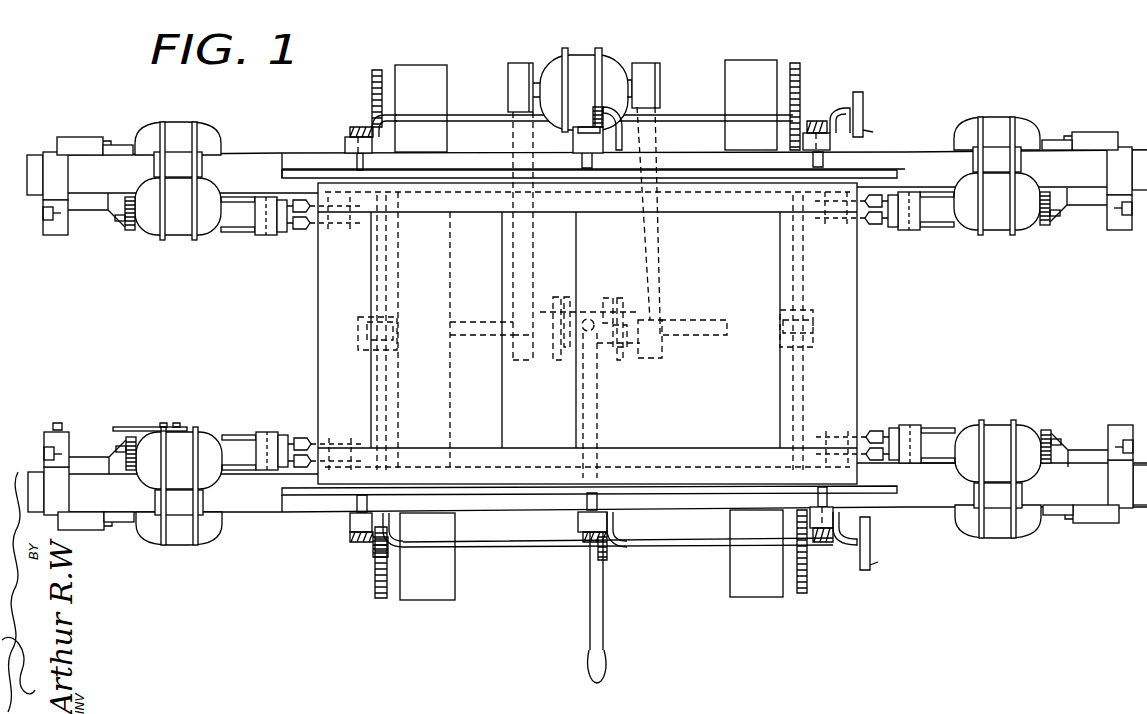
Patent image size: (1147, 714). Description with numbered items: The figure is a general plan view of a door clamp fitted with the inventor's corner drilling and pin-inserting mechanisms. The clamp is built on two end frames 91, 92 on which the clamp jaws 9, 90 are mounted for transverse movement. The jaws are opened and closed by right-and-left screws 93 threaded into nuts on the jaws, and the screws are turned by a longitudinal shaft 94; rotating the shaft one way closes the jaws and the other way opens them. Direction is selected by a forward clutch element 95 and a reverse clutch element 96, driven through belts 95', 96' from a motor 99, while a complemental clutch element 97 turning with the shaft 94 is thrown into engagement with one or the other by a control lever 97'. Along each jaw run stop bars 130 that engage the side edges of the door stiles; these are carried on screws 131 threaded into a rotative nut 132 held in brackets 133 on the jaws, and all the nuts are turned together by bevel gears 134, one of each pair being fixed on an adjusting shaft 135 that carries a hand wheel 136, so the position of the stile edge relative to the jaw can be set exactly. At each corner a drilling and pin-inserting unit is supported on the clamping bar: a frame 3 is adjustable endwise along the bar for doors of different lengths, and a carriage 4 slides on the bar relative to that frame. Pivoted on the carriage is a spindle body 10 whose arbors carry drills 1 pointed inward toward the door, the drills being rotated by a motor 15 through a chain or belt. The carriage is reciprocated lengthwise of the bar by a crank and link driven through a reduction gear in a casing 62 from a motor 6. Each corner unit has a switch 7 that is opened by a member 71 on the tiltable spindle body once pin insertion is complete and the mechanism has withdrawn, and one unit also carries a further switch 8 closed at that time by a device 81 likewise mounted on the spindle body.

The drill 1 is at (300, 213).
The frame 3 is at (43, 200).
The carriage 4 is at (588, 331).
The motor 6 is at (188, 136).
The switch 7 is at (58, 230).
The switch 8 is at (60, 423).
The clamp jaw 9 is at (268, 512).
The spindle body 10 is at (280, 228).
The motor 15 is at (176, 228).
The casing 62 is at (1102, 134).
The member 71 is at (125, 228).
The device 81 is at (132, 427).
The clamp jaw 90 is at (280, 168).
The end frame 91 is at (715, 580).
The end frame 92 is at (455, 610).
The right-and-left screw 93 is at (372, 282).
The longitudinal shaft 94 is at (688, 325).
The forward clutch element 95 is at (510, 253).
The belt 95' is at (510, 72).
The reverse clutch element 96 is at (608, 251).
The belt 96' is at (670, 87).
The complemental clutch element 97 is at (598, 371).
The control lever 97' is at (618, 597).
The motor 99 is at (582, 90).
The stop bar 130 is at (495, 168).
The screw 131 is at (282, 173).
The rotative nut 132 is at (345, 141).
The bracket 133 is at (397, 140).
The bevel gear 134 is at (362, 127).
The adjusting shaft 135 is at (490, 120).
The hand wheel 136 is at (864, 98).